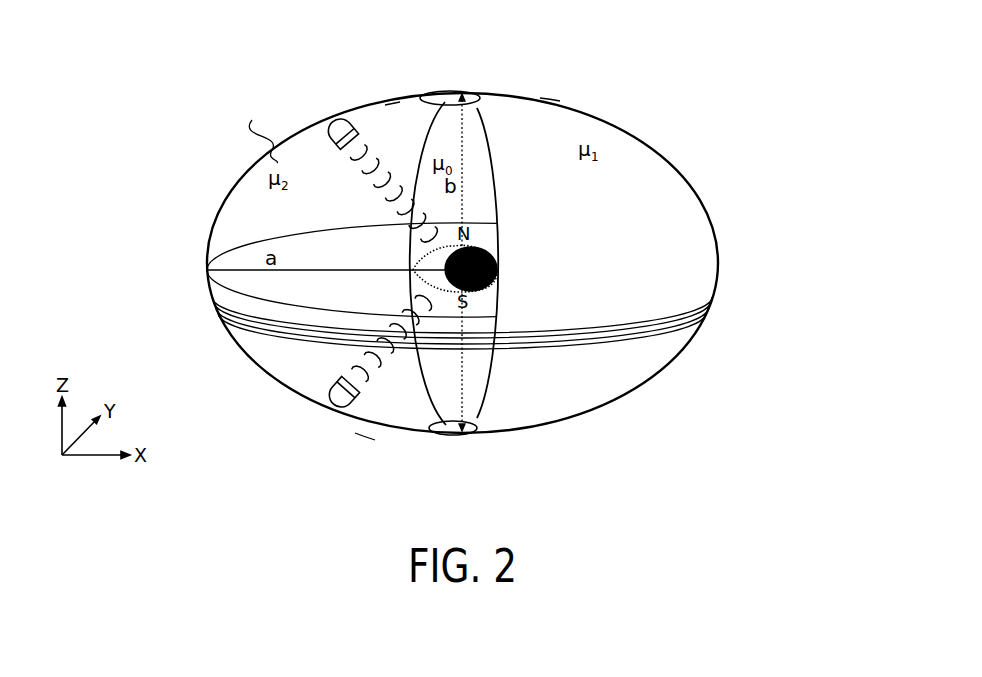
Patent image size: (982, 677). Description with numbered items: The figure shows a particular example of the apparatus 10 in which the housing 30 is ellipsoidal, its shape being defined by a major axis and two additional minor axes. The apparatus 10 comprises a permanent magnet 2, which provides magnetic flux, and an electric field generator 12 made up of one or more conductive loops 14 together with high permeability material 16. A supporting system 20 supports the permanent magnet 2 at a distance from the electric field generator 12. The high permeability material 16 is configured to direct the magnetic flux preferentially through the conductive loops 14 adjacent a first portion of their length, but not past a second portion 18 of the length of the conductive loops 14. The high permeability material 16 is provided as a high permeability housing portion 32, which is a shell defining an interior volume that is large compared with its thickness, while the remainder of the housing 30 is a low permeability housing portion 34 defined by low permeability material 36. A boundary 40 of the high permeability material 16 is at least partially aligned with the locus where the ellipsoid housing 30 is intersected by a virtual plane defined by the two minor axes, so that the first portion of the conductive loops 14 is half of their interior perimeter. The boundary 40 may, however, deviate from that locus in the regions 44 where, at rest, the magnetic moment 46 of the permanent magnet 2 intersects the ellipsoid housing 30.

The permanent magnet 2 is at (490, 288).
The apparatus 10 is at (812, 86).
The electric field generator 12 is at (727, 160).
The conductive loop 14 is at (713, 302).
The high permeability material 16 is at (678, 327).
The second portion of the length of the conductive loops 18 is at (275, 323).
The supporting system 20 is at (372, 177).
The housing 30 is at (360, 442).
The high permeability housing portion 32 is at (550, 102).
The low permeability housing portion 34 is at (393, 103).
The low permeability material 36 is at (248, 205).
The boundary of the high permeability material 40 is at (424, 99).
The regions 44 is at (473, 100).
The magnetic moment 46 is at (423, 133).